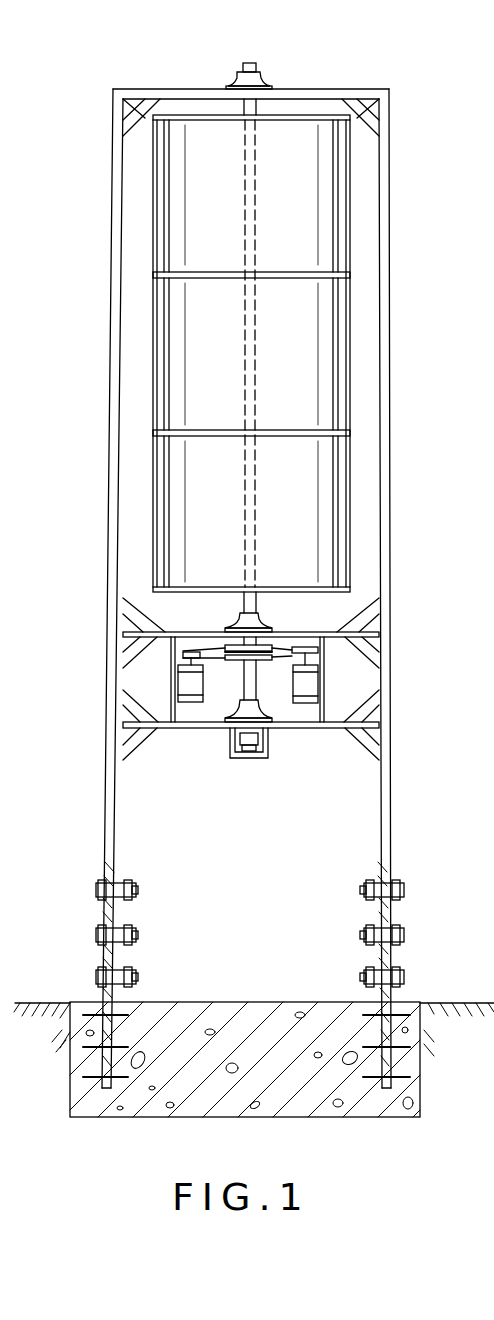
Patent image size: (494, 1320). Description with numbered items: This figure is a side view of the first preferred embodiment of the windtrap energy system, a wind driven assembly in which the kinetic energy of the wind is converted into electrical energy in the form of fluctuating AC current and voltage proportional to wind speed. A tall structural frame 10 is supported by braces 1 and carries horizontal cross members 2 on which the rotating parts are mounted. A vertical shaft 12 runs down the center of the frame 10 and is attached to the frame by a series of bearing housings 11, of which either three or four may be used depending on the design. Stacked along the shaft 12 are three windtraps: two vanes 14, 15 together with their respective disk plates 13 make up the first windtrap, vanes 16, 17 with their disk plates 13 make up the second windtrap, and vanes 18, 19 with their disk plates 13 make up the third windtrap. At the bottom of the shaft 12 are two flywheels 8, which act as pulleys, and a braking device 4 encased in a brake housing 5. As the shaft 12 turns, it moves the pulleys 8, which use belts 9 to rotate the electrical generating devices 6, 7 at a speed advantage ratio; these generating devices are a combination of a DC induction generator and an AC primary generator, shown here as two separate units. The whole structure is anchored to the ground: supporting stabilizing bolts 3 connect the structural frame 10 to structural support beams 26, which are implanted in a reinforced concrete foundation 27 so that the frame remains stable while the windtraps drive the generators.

The braces 1 is at (123, 99).
The cross beams 2 is at (340, 615).
The supporting stabilizing bolts 3 is at (98, 975).
The braking device 4 is at (234, 760).
The brake housing 5 is at (258, 760).
The electrical generating device 6 is at (306, 687).
The electrical generating device 7 is at (183, 685).
The flywheel 8 is at (232, 649).
The belts 9 is at (286, 646).
The structural frame 10 is at (385, 432).
The bearing housing 11 is at (240, 72).
The shaft 12 is at (256, 108).
The disk plates 13 is at (170, 125).
The vane 14 is at (182, 190).
The vane 15 is at (325, 215).
The vane 16 is at (300, 362).
The vane 17 is at (182, 352).
The vane 18 is at (300, 498).
The vane 19 is at (166, 497).
The structural support beams 26 is at (104, 1086).
The reinforced concrete foundation 27 is at (302, 1075).